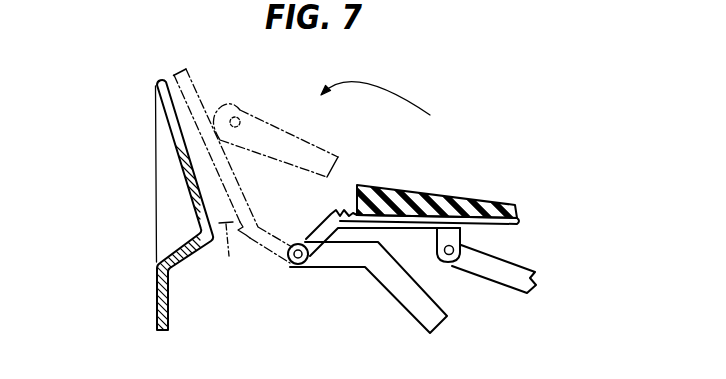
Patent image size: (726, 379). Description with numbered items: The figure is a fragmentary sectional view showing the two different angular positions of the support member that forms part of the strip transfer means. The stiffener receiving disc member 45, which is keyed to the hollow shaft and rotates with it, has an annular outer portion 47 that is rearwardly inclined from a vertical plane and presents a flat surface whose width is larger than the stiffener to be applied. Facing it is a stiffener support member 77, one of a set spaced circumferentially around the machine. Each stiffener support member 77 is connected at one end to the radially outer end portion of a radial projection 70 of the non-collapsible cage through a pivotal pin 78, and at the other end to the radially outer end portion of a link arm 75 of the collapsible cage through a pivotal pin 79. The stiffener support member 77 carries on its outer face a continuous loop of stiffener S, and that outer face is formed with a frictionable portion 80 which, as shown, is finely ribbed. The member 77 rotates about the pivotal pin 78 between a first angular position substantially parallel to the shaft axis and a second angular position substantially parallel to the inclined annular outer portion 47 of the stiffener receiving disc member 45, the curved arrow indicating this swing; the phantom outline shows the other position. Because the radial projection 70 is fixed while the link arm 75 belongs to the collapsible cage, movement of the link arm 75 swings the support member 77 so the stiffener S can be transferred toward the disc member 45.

The stiffener receiving disc member 45 is at (155, 304).
The annular outer portion 47 is at (204, 210).
The radial projections 70 is at (413, 308).
The link arms 75 is at (533, 268).
The stiffener support members 77 is at (520, 222).
The pivotal pin 78 is at (298, 262).
The pivotal pin 79 is at (450, 257).
The frictionable portion 80 is at (347, 215).
The stiffener S is at (470, 200).